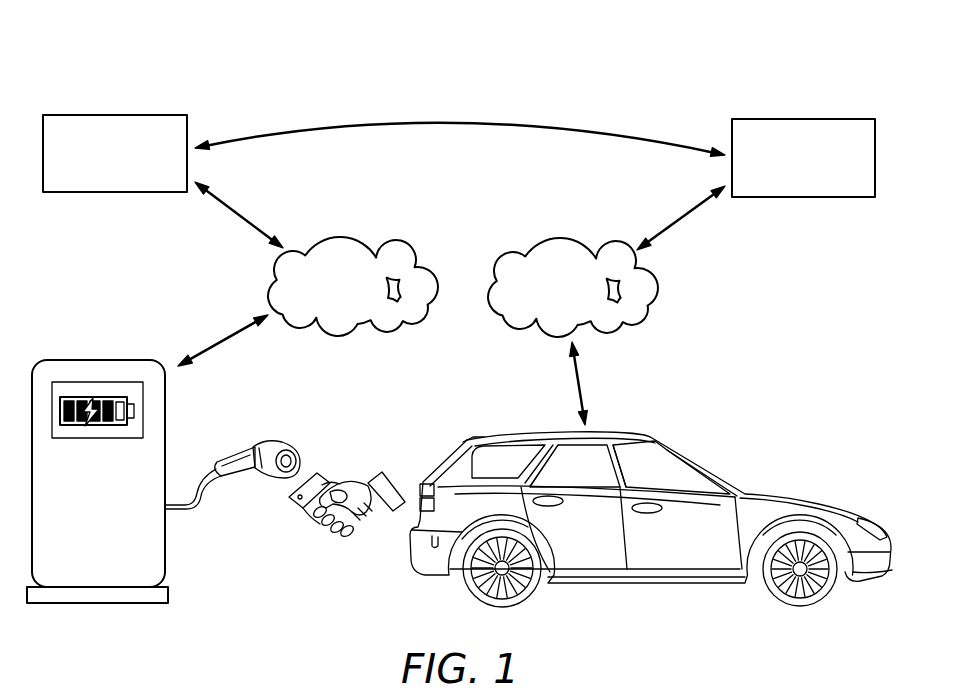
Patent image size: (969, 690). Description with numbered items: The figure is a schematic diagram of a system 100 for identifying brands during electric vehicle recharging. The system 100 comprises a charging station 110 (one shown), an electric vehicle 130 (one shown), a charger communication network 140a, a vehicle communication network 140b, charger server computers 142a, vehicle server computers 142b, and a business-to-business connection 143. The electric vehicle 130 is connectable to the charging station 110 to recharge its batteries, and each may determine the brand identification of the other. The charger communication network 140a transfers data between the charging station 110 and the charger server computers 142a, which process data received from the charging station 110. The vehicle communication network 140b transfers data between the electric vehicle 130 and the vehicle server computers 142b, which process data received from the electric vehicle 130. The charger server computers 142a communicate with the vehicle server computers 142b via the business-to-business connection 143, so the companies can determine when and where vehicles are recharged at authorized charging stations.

The system 100 is at (116, 52).
The charging station 110 is at (97, 360).
The electric vehicle 130 is at (716, 473).
The charger communication network 140a is at (355, 237).
The vehicle communication network 140b is at (572, 238).
The charger server computer 142a is at (150, 115).
The vehicle server computer 142b is at (798, 119).
The business-to-business connection 143 is at (448, 122).